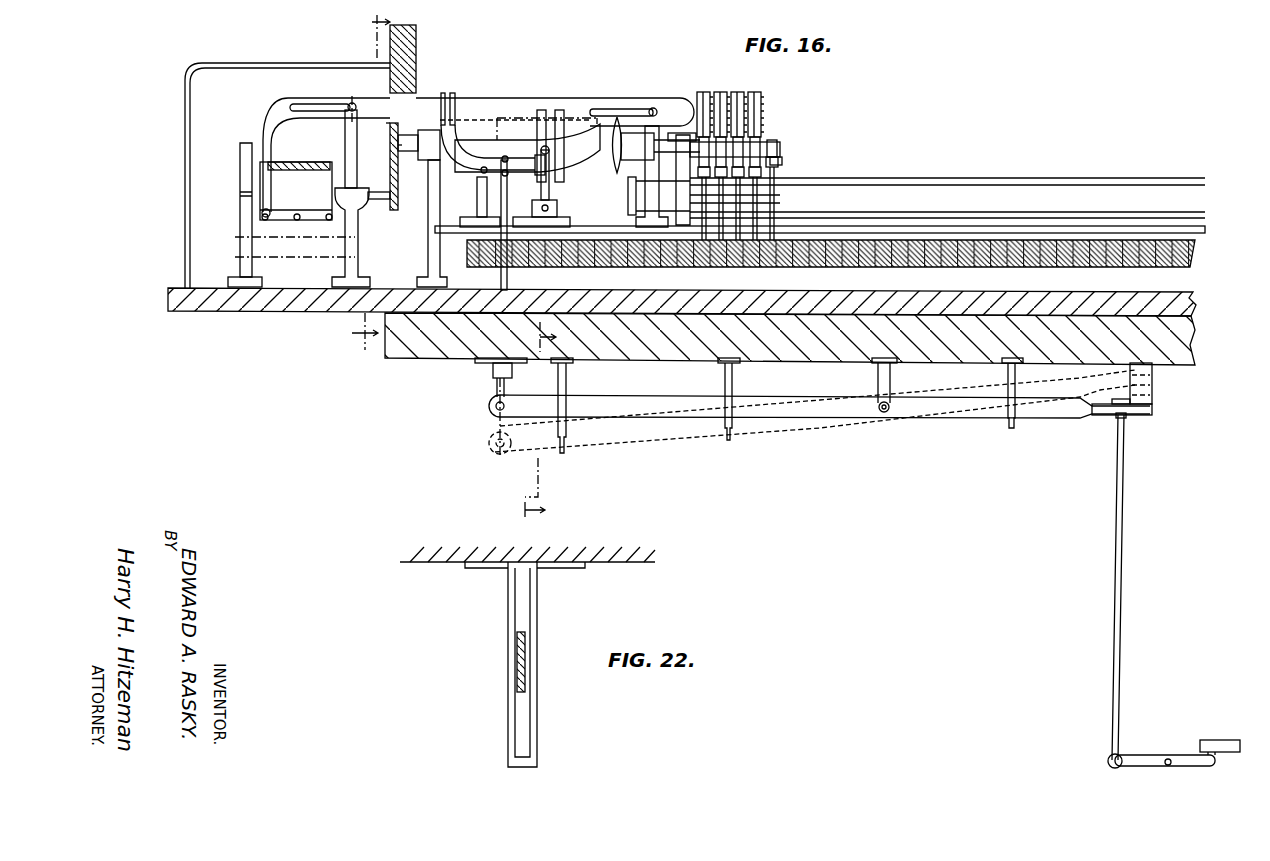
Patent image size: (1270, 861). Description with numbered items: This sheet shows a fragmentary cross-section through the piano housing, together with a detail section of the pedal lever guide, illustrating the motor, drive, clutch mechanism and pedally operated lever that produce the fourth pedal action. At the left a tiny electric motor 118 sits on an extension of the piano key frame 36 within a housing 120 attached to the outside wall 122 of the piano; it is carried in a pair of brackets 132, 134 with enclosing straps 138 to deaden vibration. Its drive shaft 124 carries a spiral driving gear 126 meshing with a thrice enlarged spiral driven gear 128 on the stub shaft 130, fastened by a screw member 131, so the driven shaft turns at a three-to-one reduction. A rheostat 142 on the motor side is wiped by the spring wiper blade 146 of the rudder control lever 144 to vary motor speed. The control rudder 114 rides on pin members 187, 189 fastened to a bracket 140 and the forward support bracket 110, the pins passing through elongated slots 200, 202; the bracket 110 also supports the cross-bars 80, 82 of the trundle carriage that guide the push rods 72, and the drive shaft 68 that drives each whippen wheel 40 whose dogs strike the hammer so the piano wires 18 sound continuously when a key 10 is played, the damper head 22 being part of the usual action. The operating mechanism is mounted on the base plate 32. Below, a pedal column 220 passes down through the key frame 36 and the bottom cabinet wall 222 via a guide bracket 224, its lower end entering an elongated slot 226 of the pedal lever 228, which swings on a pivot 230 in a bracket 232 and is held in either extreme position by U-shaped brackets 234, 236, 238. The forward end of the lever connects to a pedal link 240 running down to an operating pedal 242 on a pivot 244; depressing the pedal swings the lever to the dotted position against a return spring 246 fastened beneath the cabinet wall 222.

In FIG. 16, the piano key 10 is at (698, 266).
In FIG. 16, the piano wires 18 is at (361, 182).
In FIG. 16, the damper head 22 is at (553, 422).
In FIG. 16, the base plate 32 is at (1207, 233).
In FIG. 16, the piano key frame 36 is at (774, 292).
In FIG. 16, the whippen wheel 40 is at (752, 92).
In FIG. 16, the drive shaft 68 is at (767, 149).
In FIG. 16, the push rod 72 is at (753, 203).
In FIG. 16, the cross-bar 80 is at (1205, 216).
In FIG. 16, the cross-bar 82 is at (1205, 183).
In FIG. 16, the forward support bracket 110 is at (648, 193).
In FIG. 16, the control rudder 114 is at (553, 98).
In FIG. 16, the electric motor 118 is at (296, 191).
In FIG. 16, the housing 120 is at (198, 63).
In FIG. 16, the outside wall 122 is at (416, 36).
In FIG. 16, the drive shaft 124 is at (378, 202).
In FIG. 16, the spiral driving gear 126 is at (402, 180).
In FIG. 16, the spiral driven gear 128 is at (395, 150).
In FIG. 16, the stub shaft 130 is at (405, 137).
In FIG. 16, the screw member 131 is at (393, 128).
In FIG. 16, the bracket 132 is at (238, 268).
In FIG. 16, the bracket 134 is at (340, 270).
In FIG. 16, the enclosing straps 138 is at (240, 168).
In FIG. 16, the bracket 140 is at (357, 176).
In FIG. 16, the rheostat 142 is at (303, 160).
In FIG. 16, the rudder control lever 144 is at (264, 127).
In FIG. 16, the spring wiper blade 146 is at (262, 212).
In FIG. 16, the pin member 187 is at (351, 102).
In FIG. 16, the pin member 189 is at (654, 108).
In FIG. 16, the elongated slot 200 is at (304, 92).
In FIG. 16, the elongated slot 202 is at (608, 109).
In FIG. 16, the pedal column 220 is at (509, 277).
In FIG. 16, the bottom cabinet wall 222 is at (395, 360).
In FIG. 22, the bottom cabinet wall 222 is at (430, 553).
In FIG. 16, the guide bracket 224 is at (490, 363).
In FIG. 16, the elongated slot 226 is at (489, 407).
In FIG. 16, the pedal lever 228 is at (642, 408).
In FIG. 22, the pedal lever 228 is at (515, 664).
In FIG. 16, the pivot 230 is at (882, 412).
In FIG. 16, the bracket 232 is at (877, 378).
In FIG. 16, the U-shaped bracket 234 is at (563, 455).
In FIG. 22, the U-shaped bracket 234 is at (540, 724).
In FIG. 16, the U-shaped bracket 236 is at (728, 442).
In FIG. 16, the U-shaped bracket 238 is at (1010, 430).
In FIG. 16, the pedal link 240 is at (1117, 576).
In FIG. 16, the operating pedal 242 is at (1228, 740).
In FIG. 16, the pivot 244 is at (1167, 759).
In FIG. 16, the return spring 246 is at (1153, 401).